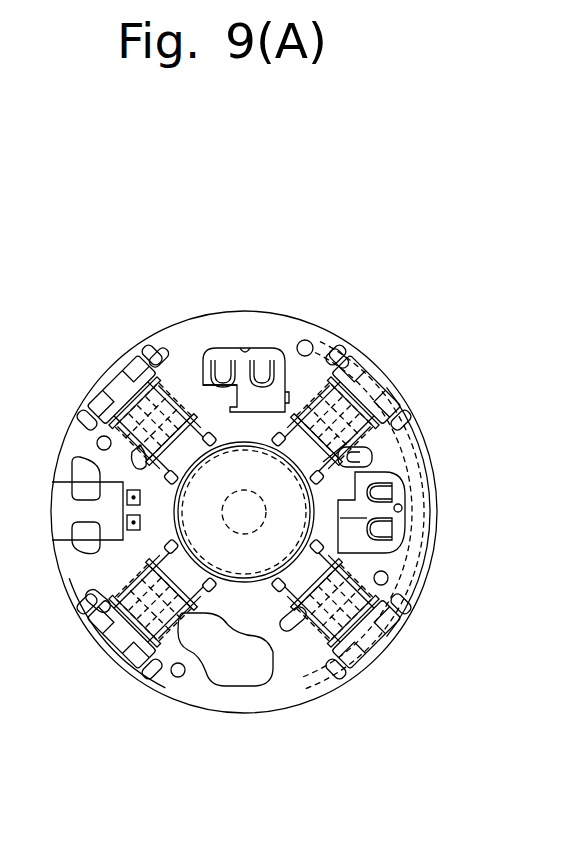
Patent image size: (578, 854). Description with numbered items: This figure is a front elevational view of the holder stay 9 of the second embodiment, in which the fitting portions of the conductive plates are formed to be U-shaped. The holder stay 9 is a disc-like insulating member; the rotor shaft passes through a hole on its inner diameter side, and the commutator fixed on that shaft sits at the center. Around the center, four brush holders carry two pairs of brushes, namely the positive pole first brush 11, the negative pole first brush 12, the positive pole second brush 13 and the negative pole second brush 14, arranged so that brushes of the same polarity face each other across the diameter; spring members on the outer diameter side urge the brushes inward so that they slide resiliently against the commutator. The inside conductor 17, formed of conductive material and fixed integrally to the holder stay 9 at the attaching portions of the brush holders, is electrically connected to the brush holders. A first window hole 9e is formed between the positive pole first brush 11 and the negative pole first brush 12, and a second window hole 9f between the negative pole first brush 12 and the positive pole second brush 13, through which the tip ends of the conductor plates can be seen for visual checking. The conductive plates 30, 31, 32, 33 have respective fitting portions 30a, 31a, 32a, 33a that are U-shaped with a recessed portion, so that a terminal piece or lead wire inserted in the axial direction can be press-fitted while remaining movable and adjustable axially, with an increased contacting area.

The holder stay 9 is at (241, 145).
The first window hole 9e is at (247, 352).
The second window hole 9f is at (402, 508).
The positive pole first brush 11 is at (145, 435).
The negative pole first brush 12 is at (345, 332).
The positive pole second brush 13 is at (291, 640).
The negative pole second brush 14 is at (165, 640).
The inside conductor 17 is at (138, 660).
The conductive plate 30 is at (200, 398).
The fitting portion 30a is at (228, 368).
The conductive plate 31 is at (292, 395).
The fitting portion 31a is at (268, 372).
The conductive plate 32 is at (425, 425).
The fitting portion 32a is at (403, 490).
The conductive plate 33 is at (353, 538).
The fitting portion 33a is at (403, 530).